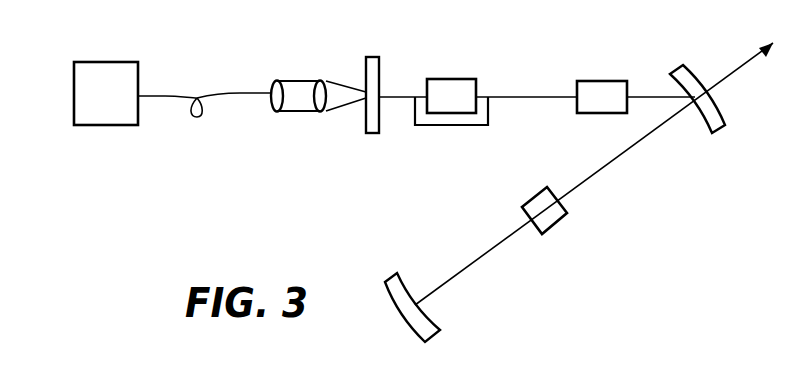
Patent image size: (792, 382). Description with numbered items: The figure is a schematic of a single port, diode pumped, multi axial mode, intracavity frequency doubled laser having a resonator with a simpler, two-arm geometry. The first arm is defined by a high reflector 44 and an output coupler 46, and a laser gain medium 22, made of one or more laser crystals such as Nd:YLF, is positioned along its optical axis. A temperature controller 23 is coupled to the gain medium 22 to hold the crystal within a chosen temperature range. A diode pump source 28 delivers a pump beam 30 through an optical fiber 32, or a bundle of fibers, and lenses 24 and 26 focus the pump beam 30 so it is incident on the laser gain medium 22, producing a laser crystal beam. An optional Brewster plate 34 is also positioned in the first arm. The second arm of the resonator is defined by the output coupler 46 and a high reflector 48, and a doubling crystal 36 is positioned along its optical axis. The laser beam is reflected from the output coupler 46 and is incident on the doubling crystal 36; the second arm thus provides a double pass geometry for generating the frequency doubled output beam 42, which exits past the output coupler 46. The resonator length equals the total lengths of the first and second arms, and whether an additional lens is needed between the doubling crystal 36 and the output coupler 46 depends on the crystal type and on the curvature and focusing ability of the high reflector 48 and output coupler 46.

The laser gain medium 22 is at (446, 90).
The temperature controller 23 is at (460, 120).
The lens 24 is at (278, 113).
The lens 26 is at (319, 113).
The diode pump source 28 is at (93, 62).
The pump beam 30 is at (342, 90).
The optical fiber 32 is at (160, 96).
The Brewster plate 34 is at (613, 80).
The doubling crystal 36 is at (560, 225).
The frequency doubled output beam 42 is at (730, 78).
The high reflector 44 is at (368, 57).
The output coupler 46 is at (723, 127).
The high reflector 48 is at (440, 333).